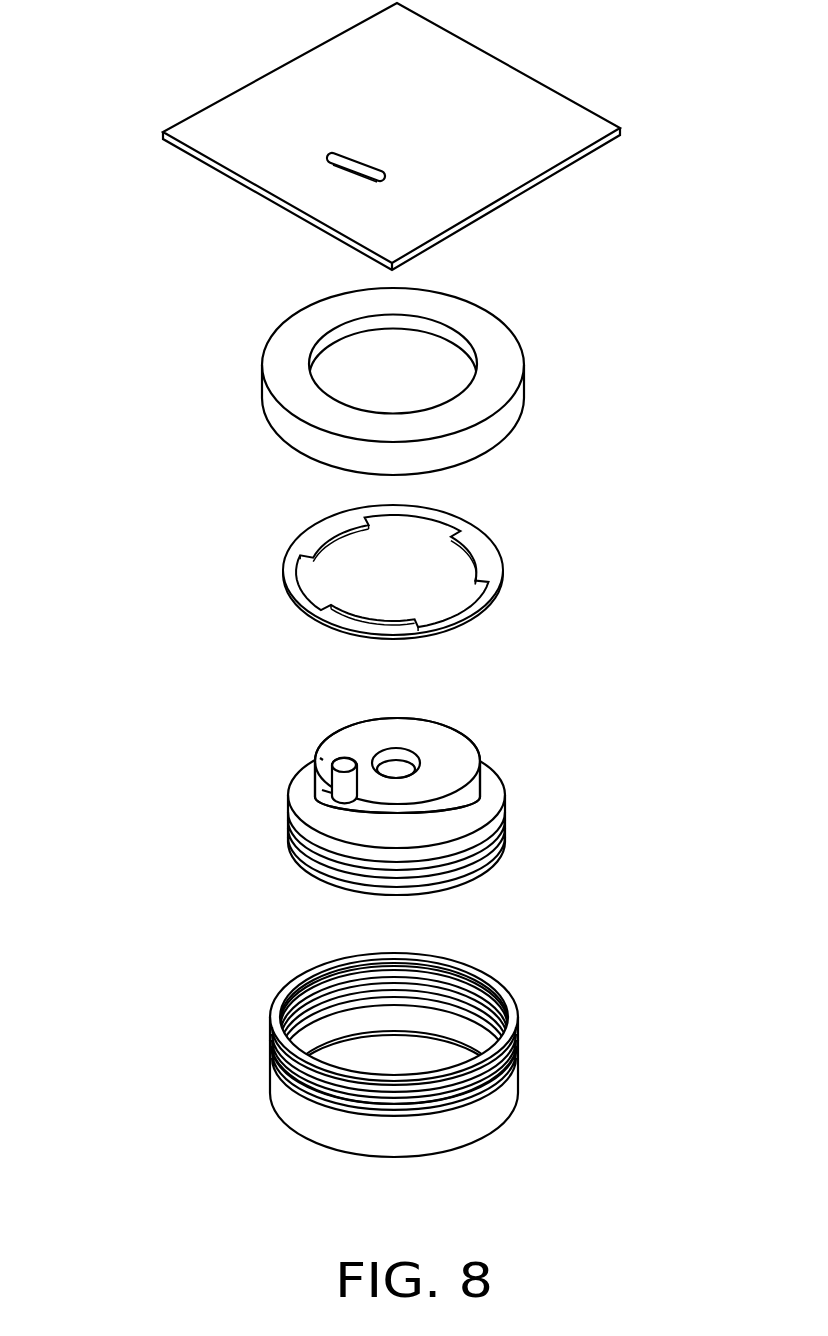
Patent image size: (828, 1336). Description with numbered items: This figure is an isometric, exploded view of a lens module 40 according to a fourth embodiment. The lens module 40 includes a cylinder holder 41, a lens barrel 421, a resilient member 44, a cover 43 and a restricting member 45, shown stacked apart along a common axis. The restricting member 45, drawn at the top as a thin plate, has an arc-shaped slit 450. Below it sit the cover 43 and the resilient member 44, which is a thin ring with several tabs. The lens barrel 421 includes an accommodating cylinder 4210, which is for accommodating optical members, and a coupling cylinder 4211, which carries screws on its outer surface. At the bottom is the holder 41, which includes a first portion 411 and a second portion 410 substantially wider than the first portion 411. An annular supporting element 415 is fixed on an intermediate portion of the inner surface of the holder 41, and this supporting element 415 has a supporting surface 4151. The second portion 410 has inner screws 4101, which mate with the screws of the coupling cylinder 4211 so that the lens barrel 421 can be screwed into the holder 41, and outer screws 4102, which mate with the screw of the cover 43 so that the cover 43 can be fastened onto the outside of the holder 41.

The lens module 40 is at (170, 58).
The restricting member 45 is at (522, 98).
The arc-shaped slit 450 is at (352, 163).
The cover 43 is at (498, 347).
The resilient member 44 is at (483, 595).
The lens barrel 421 is at (637, 755).
The accommodating cylinder 4210 is at (493, 790).
The coupling cylinder 4211 is at (505, 822).
The cylinder holder 41 is at (617, 993).
The second portion 410 is at (508, 1025).
The first portion 411 is at (487, 1112).
The annular supporting element 415 is at (408, 1032).
The supporting surface 4151 is at (458, 1035).
The inner screws 4101 is at (312, 988).
The outer screws 4102 is at (273, 1065).